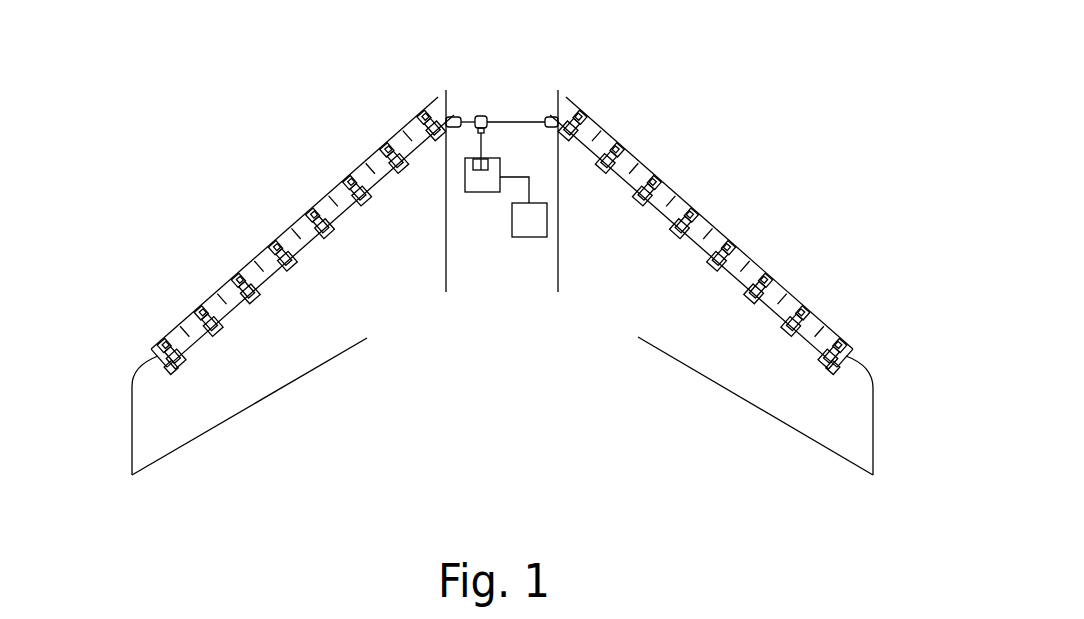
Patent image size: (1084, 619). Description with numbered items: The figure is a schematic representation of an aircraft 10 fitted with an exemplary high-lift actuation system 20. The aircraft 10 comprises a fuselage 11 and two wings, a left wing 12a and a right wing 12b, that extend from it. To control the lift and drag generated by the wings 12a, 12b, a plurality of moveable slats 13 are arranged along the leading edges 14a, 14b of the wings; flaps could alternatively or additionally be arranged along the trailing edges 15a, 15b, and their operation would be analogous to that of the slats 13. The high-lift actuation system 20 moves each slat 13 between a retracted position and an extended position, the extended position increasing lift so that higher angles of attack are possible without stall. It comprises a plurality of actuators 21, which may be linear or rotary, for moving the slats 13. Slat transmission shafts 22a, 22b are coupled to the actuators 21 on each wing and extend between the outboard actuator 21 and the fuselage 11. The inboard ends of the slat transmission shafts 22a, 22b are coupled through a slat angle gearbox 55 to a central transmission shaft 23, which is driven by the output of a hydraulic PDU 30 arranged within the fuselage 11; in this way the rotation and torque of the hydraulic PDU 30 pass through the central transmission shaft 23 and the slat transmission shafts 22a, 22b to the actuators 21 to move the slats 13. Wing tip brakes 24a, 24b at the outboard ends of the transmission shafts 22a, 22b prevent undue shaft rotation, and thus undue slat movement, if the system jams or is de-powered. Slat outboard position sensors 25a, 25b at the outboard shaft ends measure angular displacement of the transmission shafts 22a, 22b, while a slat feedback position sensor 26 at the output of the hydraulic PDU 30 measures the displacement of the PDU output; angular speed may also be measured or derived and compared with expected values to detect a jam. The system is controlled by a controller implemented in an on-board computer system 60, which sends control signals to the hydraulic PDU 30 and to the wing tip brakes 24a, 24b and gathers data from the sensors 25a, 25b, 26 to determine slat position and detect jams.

The aircraft 10 is at (713, 95).
The fuselage 11 is at (559, 264).
The left wing 12a is at (353, 315).
The right wing 12b is at (690, 335).
The slat 13 is at (797, 330).
The leading edge 14a is at (292, 228).
The leading edge 14b is at (708, 223).
The trailing edge 15a is at (253, 405).
The trailing edge 15b is at (732, 395).
The high-lift actuation system 20 is at (485, 76).
The actuator 21 is at (838, 342).
The slat transmission shaft 22a is at (378, 162).
The slat transmission shaft 22b is at (622, 176).
The central transmission shaft 23 is at (526, 119).
The wing tip brake 24a is at (195, 357).
The wing tip brake 24b is at (807, 352).
The slat outboard position sensor 25a is at (168, 366).
The slat outboard position sensor 25b is at (843, 370).
The slat feedback position sensor 26 is at (488, 162).
The hydraulic PDU 30 is at (482, 192).
The slat angle gearbox 55 is at (457, 116).
The on-board computer system 60 is at (530, 237).